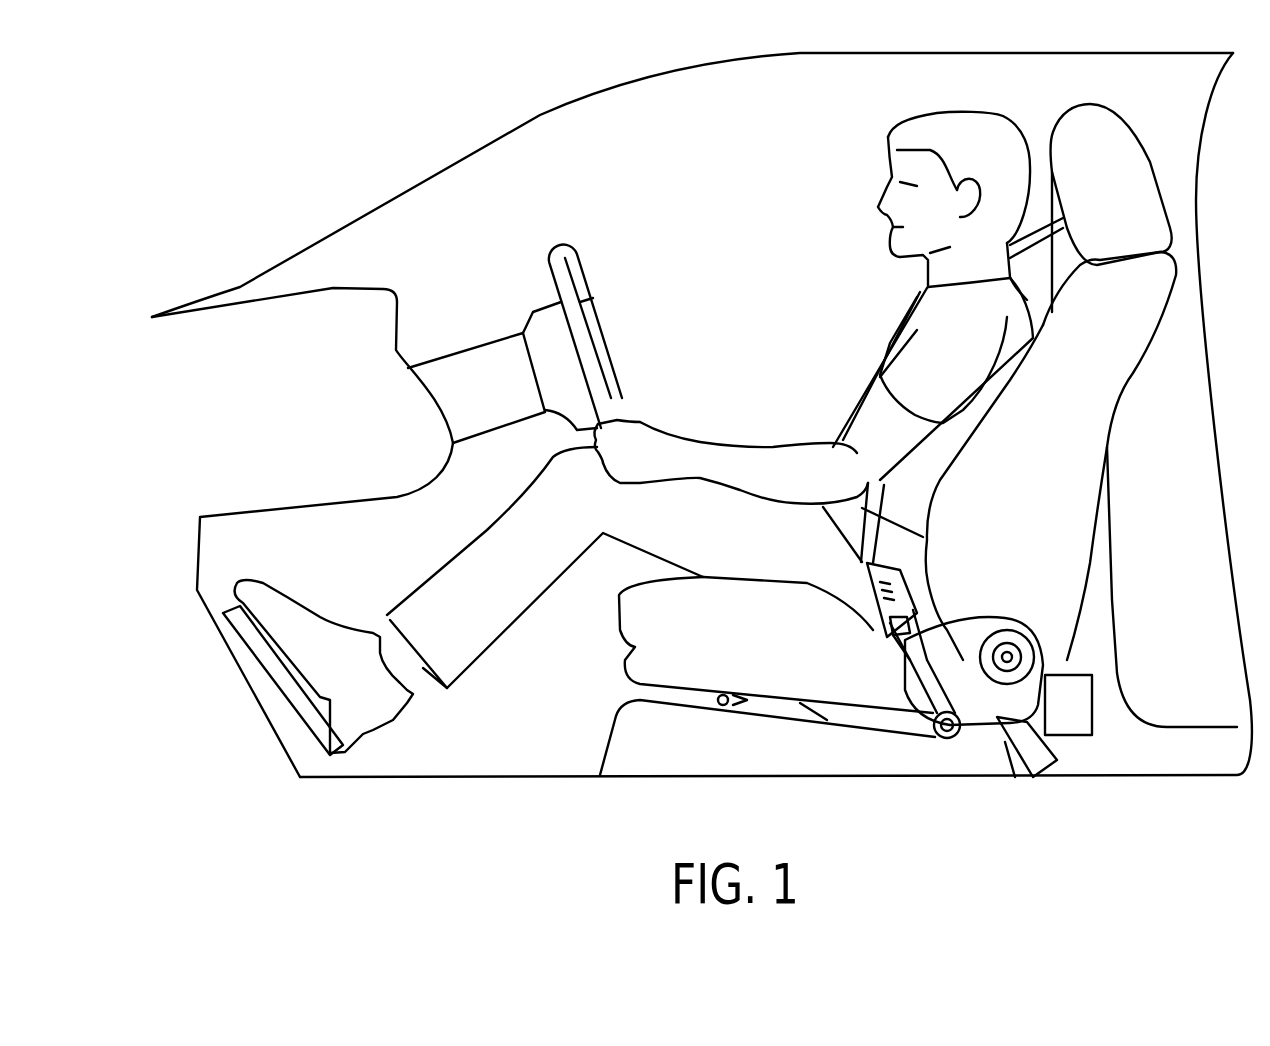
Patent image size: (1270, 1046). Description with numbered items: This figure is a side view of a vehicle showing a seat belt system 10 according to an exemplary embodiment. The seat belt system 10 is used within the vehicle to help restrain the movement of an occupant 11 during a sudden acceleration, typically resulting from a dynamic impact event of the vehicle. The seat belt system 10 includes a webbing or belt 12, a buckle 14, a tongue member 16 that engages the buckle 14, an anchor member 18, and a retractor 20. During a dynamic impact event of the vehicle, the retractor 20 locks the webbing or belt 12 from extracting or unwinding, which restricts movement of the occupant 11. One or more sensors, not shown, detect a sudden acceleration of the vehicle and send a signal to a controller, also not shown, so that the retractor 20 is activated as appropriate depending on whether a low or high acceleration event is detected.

The seat belt system 10 is at (272, 136).
The occupant 11 is at (785, 465).
The webbing or belt 12 is at (1067, 663).
The buckle 14 is at (875, 630).
The tongue member 16 is at (862, 568).
The anchor member 18 is at (1040, 782).
The retractor 20 is at (1080, 717).